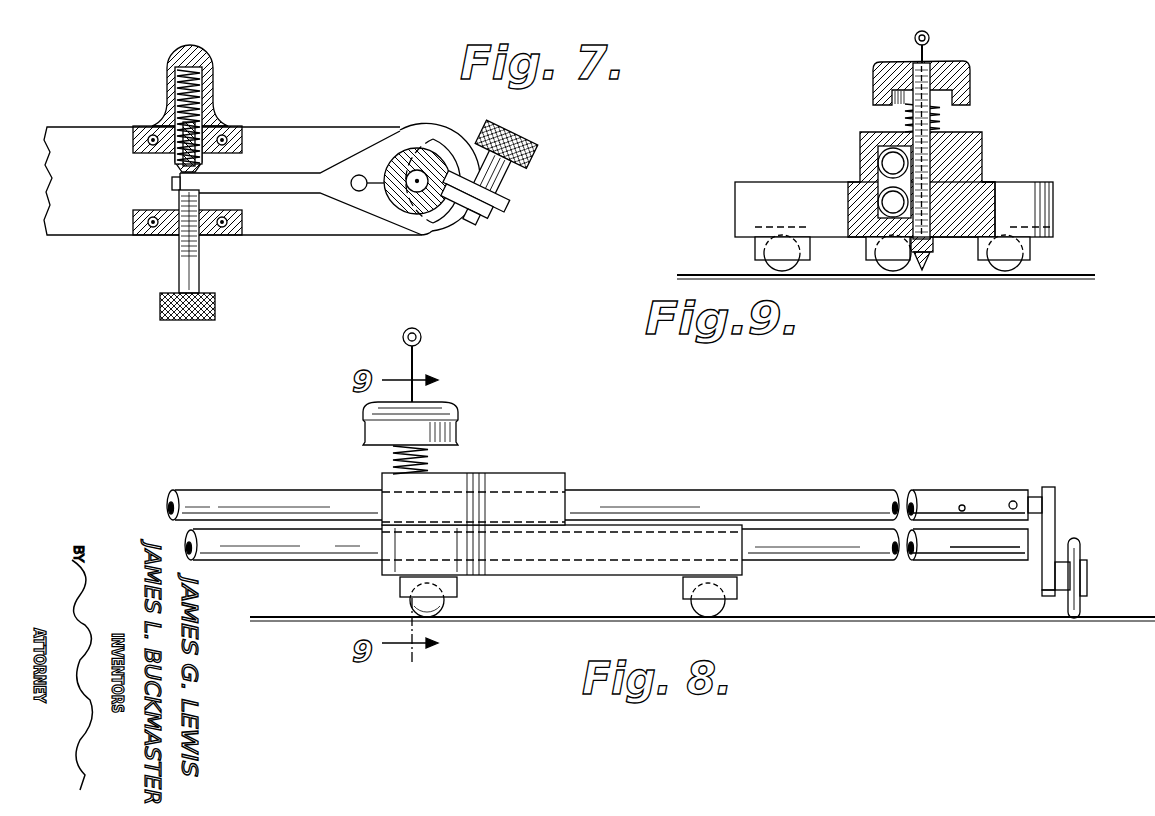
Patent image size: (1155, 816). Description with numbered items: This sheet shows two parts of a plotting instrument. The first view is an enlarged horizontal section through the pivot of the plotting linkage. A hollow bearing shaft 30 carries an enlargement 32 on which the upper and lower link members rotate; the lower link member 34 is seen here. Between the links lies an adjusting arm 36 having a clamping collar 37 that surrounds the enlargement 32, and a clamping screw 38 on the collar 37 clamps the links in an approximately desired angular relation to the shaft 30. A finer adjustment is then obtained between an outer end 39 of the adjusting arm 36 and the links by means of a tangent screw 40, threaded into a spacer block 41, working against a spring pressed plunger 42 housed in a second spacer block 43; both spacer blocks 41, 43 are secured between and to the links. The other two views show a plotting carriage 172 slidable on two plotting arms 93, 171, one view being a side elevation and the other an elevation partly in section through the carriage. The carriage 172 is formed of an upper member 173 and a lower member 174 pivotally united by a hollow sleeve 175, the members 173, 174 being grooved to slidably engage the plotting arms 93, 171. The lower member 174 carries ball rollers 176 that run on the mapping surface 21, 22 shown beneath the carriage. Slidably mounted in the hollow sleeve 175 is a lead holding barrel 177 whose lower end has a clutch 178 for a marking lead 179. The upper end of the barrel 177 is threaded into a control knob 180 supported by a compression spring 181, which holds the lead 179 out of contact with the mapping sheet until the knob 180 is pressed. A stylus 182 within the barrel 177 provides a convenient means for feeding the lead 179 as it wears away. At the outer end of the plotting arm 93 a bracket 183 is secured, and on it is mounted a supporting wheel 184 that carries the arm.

In FIG. 9, the base surface 21 is at (690, 279).
In FIG. 8, the base surface 21 is at (866, 622).
In FIG. 9, the track rail 22 is at (735, 274).
In FIG. 8, the track rail 22 is at (920, 617).
In FIG. 7, the hollow bearing shaft 30 is at (419, 218).
In FIG. 7, the enlargement 32 is at (410, 148).
In FIG. 7, the lower link member 34 is at (307, 129).
In FIG. 7, the adjusting arm 36 is at (292, 185).
In FIG. 7, the clamping collar 37 is at (450, 150).
In FIG. 7, the clamping screw 38 is at (524, 133).
In FIG. 7, the outer end 39 is at (171, 184).
In FIG. 7, the tangent screw 40 is at (177, 322).
In FIG. 7, the spacer block 41 is at (166, 239).
In FIG. 7, the spring pressed plunger 42 is at (208, 112).
In FIG. 7, the second spacer block 43 is at (158, 126).
In FIG. 9, the plotting arm 93 is at (882, 160).
In FIG. 8, the plotting arm 93 is at (231, 490).
In FIG. 9, the plotting arm 171 is at (884, 193).
In FIG. 8, the plotting arm 171 is at (233, 557).
In FIG. 9, the plotting carriage 172 is at (824, 82).
In FIG. 8, the plotting carriage 172 is at (524, 422).
In FIG. 9, the upper member 173 is at (984, 144).
In FIG. 8, the upper member 173 is at (544, 474).
In FIG. 9, the lower member 174 is at (1055, 207).
In FIG. 8, the lower member 174 is at (583, 568).
In FIG. 9, the hollow sleeve 175 is at (950, 140).
In FIG. 8, the hollow sleeve 175 is at (425, 465).
In FIG. 9, the ball rollers 176 is at (782, 270).
In FIG. 8, the ball rollers 176 is at (437, 615).
In FIG. 9, the lead holding barrel 177 is at (982, 187).
In FIG. 8, the lead holding barrel 177 is at (400, 586).
In FIG. 9, the clutch 178 is at (940, 265).
In FIG. 8, the clutch 178 is at (410, 612).
In FIG. 9, the marking lead 179 is at (923, 275).
In FIG. 8, the marking lead 179 is at (410, 620).
In FIG. 9, the control knob 180 is at (968, 80).
In FIG. 8, the control knob 180 is at (445, 406).
In FIG. 9, the compression spring 181 is at (905, 118).
In FIG. 8, the compression spring 181 is at (393, 455).
In FIG. 9, the stylus 182 is at (924, 62).
In FIG. 8, the stylus 182 is at (419, 346).
In FIG. 8, the bracket 183 is at (1055, 498).
In FIG. 8, the supporting wheel 184 is at (1080, 615).